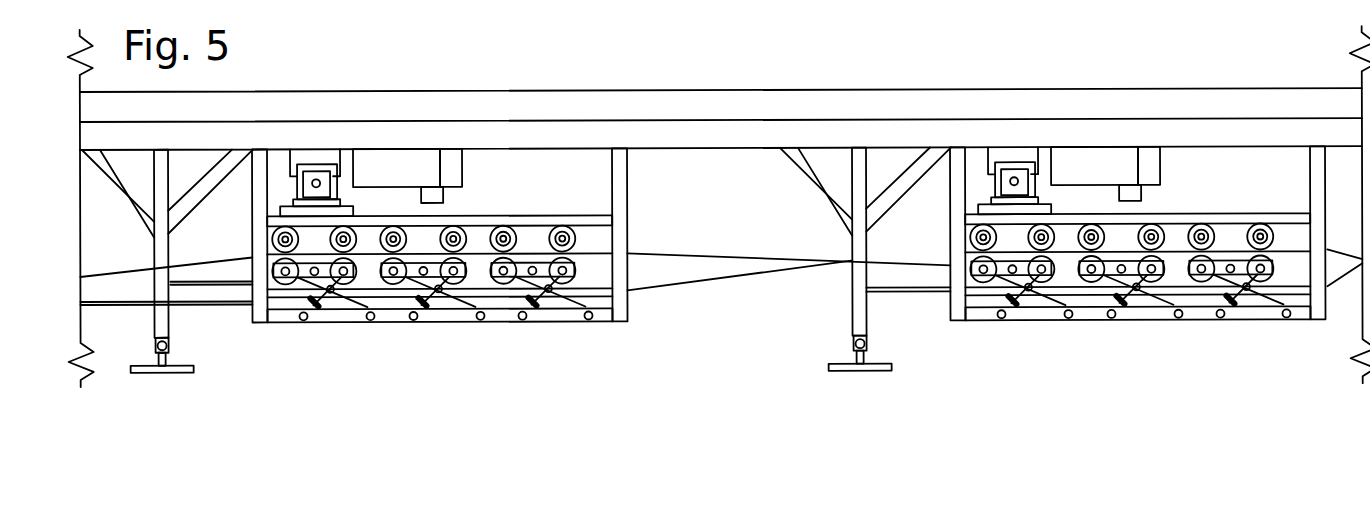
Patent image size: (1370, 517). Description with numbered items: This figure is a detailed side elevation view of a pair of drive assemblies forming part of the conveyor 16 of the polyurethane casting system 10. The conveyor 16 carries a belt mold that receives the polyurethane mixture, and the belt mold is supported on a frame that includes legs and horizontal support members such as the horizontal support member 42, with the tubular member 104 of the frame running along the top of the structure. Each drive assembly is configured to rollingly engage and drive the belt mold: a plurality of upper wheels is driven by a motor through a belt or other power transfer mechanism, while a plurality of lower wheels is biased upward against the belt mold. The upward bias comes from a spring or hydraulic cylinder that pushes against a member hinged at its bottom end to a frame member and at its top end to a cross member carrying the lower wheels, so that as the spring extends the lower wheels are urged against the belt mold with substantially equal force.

The polyurethane casting system 10 is at (1181, 44).
The conveyor 16 is at (761, 379).
The horizontal support member 42 is at (668, 150).
The tubular member 104 is at (572, 92).